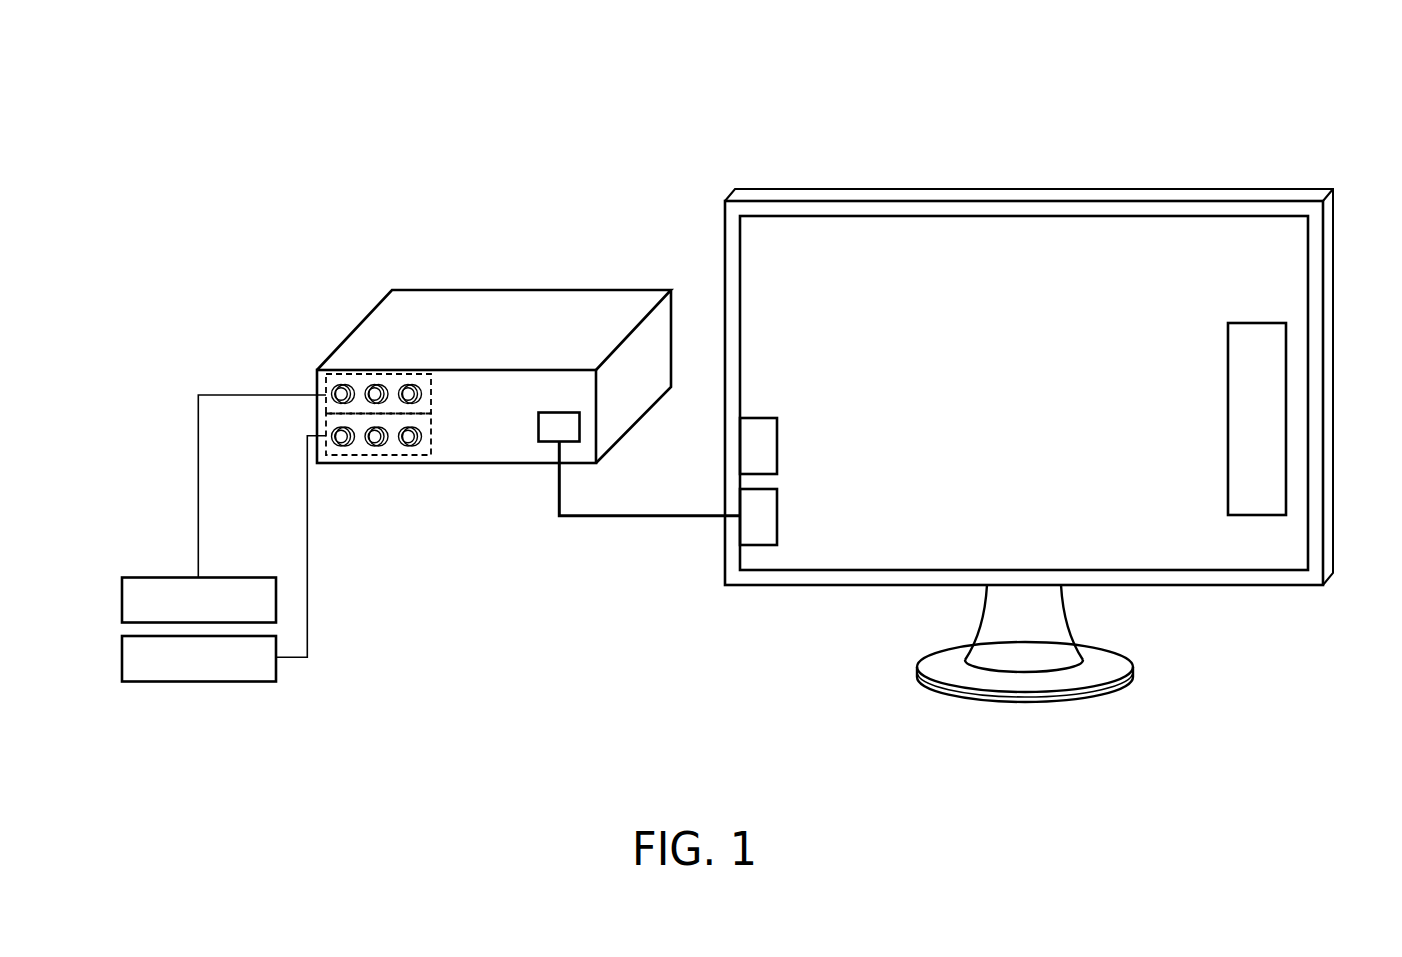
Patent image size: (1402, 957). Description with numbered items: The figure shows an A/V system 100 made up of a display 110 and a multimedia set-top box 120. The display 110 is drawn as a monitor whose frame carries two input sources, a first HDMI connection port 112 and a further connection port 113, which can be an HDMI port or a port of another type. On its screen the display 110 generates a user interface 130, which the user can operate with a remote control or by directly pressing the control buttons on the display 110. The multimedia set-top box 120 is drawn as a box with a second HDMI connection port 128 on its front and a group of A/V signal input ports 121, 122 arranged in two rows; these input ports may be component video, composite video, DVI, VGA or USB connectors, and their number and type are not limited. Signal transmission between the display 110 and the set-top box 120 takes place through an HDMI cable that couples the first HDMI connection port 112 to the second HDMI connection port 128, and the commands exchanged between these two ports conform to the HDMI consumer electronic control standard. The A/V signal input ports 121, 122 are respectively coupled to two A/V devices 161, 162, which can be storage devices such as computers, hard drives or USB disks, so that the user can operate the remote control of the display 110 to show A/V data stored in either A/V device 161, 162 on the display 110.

The A/V system 100 is at (340, 112).
The display 110 is at (1230, 189).
The first HDMI connection port 112 is at (762, 536).
The connection port 113 is at (755, 417).
The multimedia set-top box 120 is at (447, 298).
The A/V signal input port 121 is at (343, 374).
The A/V signal input port 122 is at (378, 454).
The second HDMI connection port 128 is at (550, 432).
The user interface 130 is at (1286, 415).
The A/V device 161 is at (158, 577).
The A/V device 162 is at (157, 682).